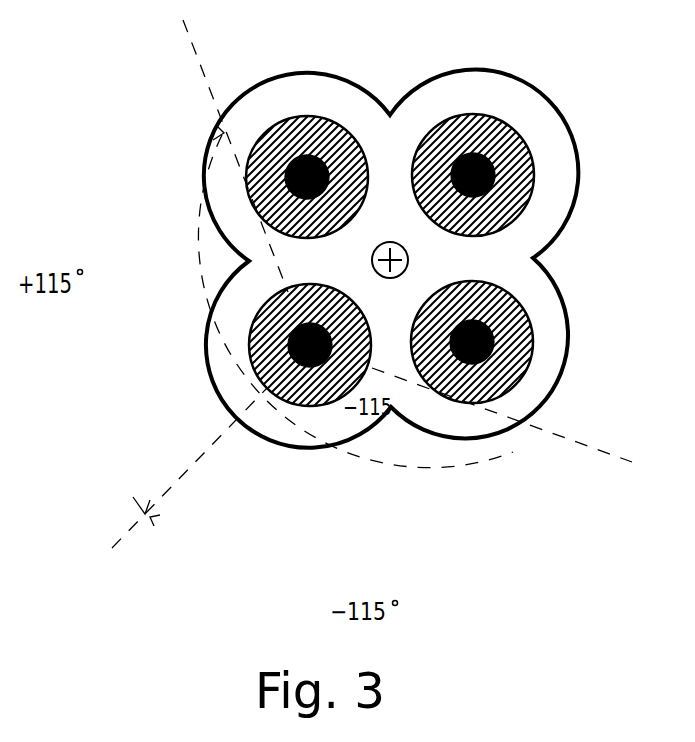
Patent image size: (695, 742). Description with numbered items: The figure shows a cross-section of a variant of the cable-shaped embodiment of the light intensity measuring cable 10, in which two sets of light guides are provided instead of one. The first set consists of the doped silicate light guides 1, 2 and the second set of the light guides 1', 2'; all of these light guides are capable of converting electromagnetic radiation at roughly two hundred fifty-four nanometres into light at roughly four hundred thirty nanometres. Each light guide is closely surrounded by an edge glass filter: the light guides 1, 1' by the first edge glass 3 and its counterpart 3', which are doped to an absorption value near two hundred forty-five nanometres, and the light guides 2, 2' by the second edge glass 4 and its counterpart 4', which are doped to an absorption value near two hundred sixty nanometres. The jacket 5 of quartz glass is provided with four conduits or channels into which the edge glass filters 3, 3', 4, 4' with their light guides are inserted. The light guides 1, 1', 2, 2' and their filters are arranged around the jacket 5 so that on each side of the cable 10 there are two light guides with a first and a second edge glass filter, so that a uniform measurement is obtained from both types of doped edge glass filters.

The first doped silicate light guide 1 is at (250, 363).
The second doped silicate light guide 2 is at (245, 193).
The first edge glass 3 is at (310, 402).
The second edge glass 4 is at (261, 170).
The jacket 5 is at (352, 424).
The cable 10 is at (363, 284).
The light guide 1' is at (540, 189).
The light guide 2' is at (510, 411).
The edge glass filter 3' is at (520, 192).
The edge glass filter 4' is at (472, 405).